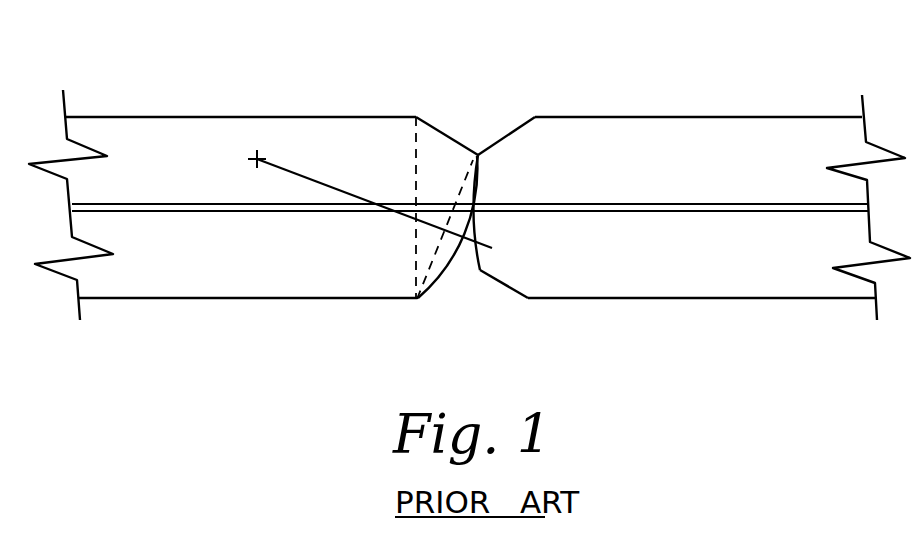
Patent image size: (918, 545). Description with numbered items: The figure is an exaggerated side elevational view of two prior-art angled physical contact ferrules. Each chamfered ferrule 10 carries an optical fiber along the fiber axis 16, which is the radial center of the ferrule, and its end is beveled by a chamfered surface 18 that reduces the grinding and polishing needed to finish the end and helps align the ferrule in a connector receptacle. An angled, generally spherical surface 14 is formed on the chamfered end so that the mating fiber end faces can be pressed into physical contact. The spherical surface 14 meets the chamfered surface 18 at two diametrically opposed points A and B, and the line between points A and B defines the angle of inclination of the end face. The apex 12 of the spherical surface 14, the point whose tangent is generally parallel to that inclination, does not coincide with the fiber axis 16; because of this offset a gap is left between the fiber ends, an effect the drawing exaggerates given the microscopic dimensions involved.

The chamfered ferrule 10 is at (300, 117).
The apex 12 is at (473, 232).
The spherical surface 14 is at (442, 268).
The fiber axis 16 is at (435, 210).
The chamfered surface 18 is at (427, 117).
The point A is at (480, 153).
The point B is at (420, 300).